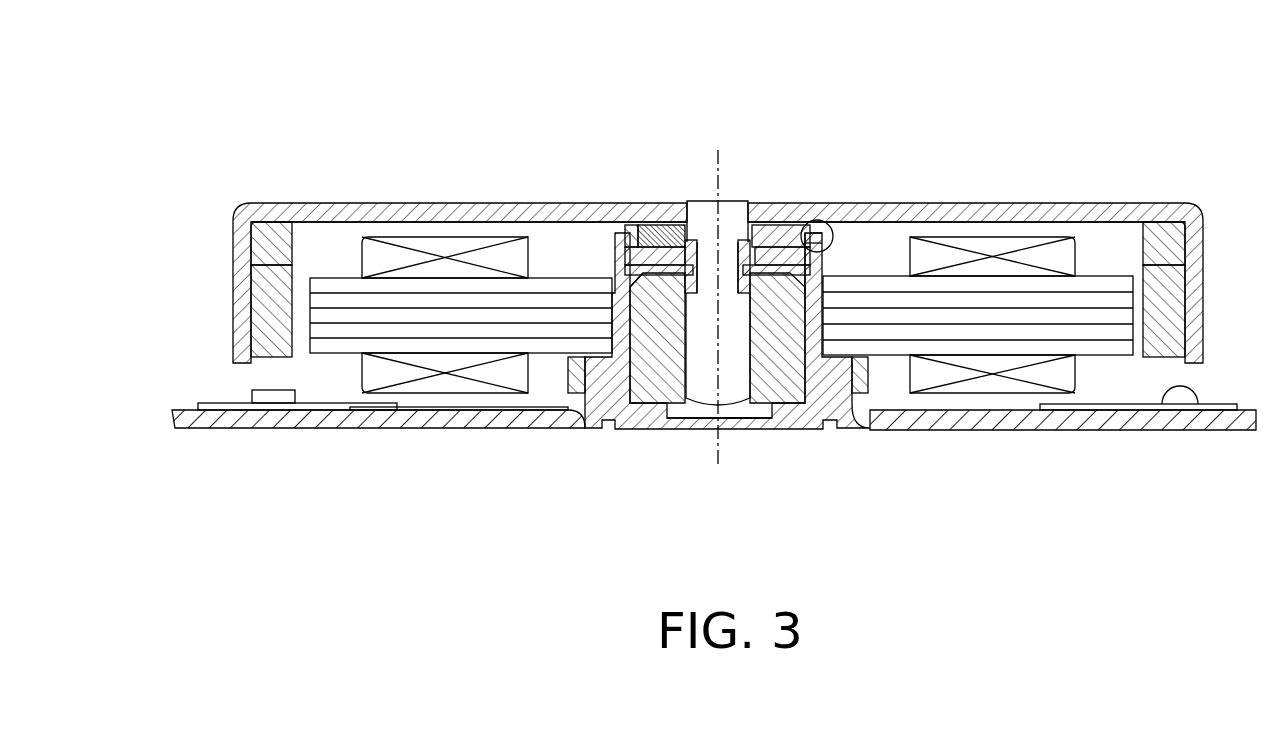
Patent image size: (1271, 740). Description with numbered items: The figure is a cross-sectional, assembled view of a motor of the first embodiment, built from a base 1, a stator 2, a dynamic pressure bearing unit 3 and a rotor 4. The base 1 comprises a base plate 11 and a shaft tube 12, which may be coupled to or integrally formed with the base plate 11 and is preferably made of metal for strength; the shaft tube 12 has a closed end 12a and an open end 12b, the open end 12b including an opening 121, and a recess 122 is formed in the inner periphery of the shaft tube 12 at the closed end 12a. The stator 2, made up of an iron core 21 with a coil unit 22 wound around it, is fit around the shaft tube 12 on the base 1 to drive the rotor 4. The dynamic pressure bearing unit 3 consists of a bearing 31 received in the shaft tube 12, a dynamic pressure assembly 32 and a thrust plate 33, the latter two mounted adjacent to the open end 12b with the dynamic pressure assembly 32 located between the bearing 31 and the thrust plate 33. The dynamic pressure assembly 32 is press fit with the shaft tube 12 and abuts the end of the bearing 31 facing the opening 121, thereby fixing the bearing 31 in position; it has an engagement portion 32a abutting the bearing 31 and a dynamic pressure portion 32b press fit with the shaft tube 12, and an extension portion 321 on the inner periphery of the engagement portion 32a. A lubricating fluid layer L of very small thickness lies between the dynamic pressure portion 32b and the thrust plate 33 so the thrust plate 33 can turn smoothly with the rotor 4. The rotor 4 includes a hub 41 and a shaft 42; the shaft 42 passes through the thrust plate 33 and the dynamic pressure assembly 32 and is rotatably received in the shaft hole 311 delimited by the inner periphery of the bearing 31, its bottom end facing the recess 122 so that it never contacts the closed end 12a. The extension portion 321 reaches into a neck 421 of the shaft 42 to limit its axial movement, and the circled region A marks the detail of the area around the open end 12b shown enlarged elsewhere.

The base 1 is at (714, 314).
The base plate 11 is at (992, 423).
The shaft tube 12 is at (773, 314).
The closed end 12a is at (740, 423).
The open end 12b is at (813, 230).
The opening 121 is at (810, 243).
The recess 122 is at (688, 414).
The stator 2 is at (780, 252).
The iron core 21 is at (1112, 283).
The coil unit 22 is at (1062, 253).
The dynamic pressure bearing unit 3 is at (720, 274).
The bearing 31 is at (662, 293).
The shaft hole 311 is at (737, 380).
The dynamic pressure assembly 32 is at (680, 187).
The engagement portion 32a is at (632, 268).
The dynamic pressure portion 32b is at (643, 253).
The extension portion 321 is at (815, 320).
The thrust plate 33 is at (768, 245).
The rotor 4 is at (718, 217).
The hub 41 is at (1025, 207).
The shaft 42 is at (705, 389).
The neck 421 is at (685, 285).
The detail region A is at (836, 228).
The lubricating fluid layer L is at (790, 230).